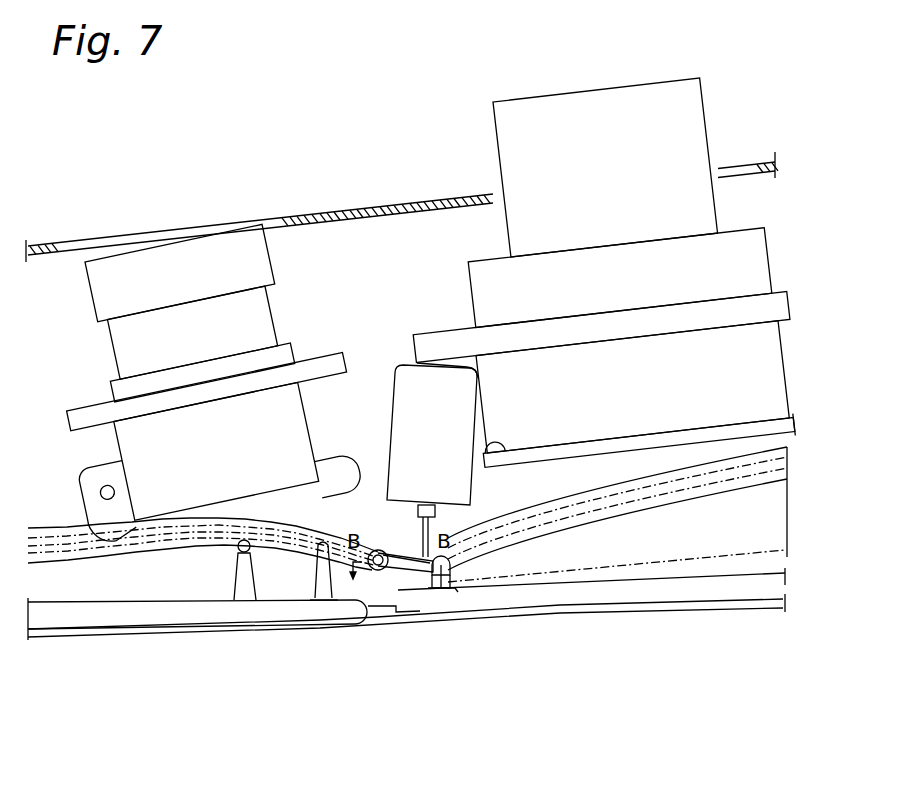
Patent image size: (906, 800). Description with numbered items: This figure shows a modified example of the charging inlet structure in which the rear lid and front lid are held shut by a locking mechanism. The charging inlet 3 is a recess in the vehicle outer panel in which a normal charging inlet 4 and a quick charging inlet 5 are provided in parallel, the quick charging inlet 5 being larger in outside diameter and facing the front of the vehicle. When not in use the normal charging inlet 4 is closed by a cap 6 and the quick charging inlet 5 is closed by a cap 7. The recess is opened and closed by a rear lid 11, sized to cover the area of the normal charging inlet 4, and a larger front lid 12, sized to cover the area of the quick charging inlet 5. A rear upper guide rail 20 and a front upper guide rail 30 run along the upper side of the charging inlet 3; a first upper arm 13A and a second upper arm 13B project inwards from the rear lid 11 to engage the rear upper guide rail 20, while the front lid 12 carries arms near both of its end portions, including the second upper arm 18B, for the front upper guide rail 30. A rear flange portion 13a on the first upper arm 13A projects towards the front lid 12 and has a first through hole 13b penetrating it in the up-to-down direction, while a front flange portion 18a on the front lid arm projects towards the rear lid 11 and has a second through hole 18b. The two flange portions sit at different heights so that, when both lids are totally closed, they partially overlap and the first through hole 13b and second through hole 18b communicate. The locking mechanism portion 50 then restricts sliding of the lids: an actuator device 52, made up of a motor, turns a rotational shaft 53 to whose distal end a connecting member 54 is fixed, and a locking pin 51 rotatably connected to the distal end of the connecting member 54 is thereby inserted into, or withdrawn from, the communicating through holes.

The charging inlet 3 is at (368, 250).
The normal charging inlet 4 is at (196, 312).
The quick charging inlet 5 is at (508, 302).
The cap 6 is at (270, 505).
The cap 7 is at (725, 432).
The rear lid 11 is at (177, 613).
The front lid 12 is at (613, 598).
The first upper arm 13A is at (325, 600).
The second upper arm 13B is at (245, 600).
The rear flange portion 13a is at (334, 602).
The first through hole 13b is at (374, 548).
The second upper arm 18B is at (432, 590).
The front flange portion 18a is at (407, 596).
The second through hole 18b is at (394, 493).
The rear upper guide rail 20 is at (132, 550).
The front upper guide rail 30 is at (657, 552).
The locking mechanism portion 50 is at (379, 592).
The locking pin 51 is at (382, 548).
The actuator device 52 is at (404, 362).
The rotational shaft 53 is at (452, 558).
The connecting member 54 is at (446, 592).